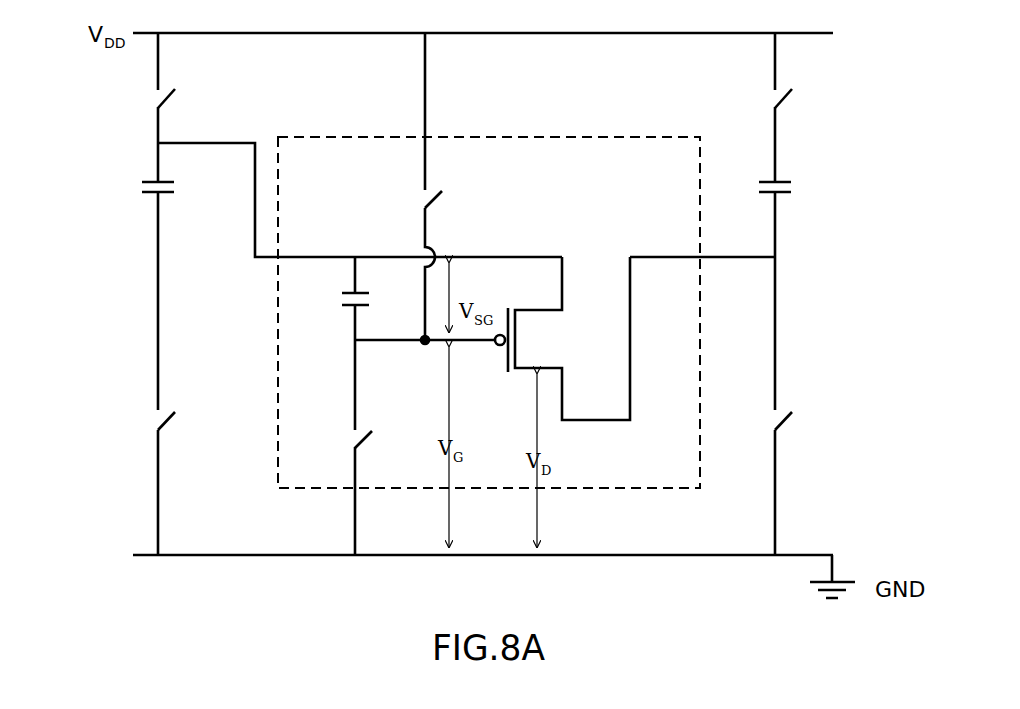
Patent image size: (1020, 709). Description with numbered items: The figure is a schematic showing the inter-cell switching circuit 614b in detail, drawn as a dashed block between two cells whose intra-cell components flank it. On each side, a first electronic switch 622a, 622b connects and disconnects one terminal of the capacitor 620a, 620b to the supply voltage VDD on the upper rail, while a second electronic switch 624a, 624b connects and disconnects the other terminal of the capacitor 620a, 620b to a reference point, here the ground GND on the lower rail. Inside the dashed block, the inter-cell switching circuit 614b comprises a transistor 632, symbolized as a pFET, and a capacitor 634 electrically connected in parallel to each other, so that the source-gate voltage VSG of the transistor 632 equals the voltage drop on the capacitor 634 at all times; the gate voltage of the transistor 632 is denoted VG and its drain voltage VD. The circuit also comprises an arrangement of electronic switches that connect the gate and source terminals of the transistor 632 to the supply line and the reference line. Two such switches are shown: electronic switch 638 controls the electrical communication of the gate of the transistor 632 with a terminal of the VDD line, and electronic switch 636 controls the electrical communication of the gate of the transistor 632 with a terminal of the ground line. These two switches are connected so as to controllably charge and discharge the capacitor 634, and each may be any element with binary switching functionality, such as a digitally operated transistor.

The first electronic switch 622a is at (143, 92).
The capacitor 620a is at (125, 182).
The second electronic switch 624a is at (142, 415).
The first electronic switch 622b is at (748, 95).
The capacitor 620b is at (747, 173).
The second electronic switch 624b is at (758, 425).
The electronic switch 638 is at (412, 203).
The capacitor 634 is at (337, 305).
The electronic switch 636 is at (380, 422).
The transistor 632 is at (578, 314).
The inter-cell switching circuit 614b is at (347, 477).